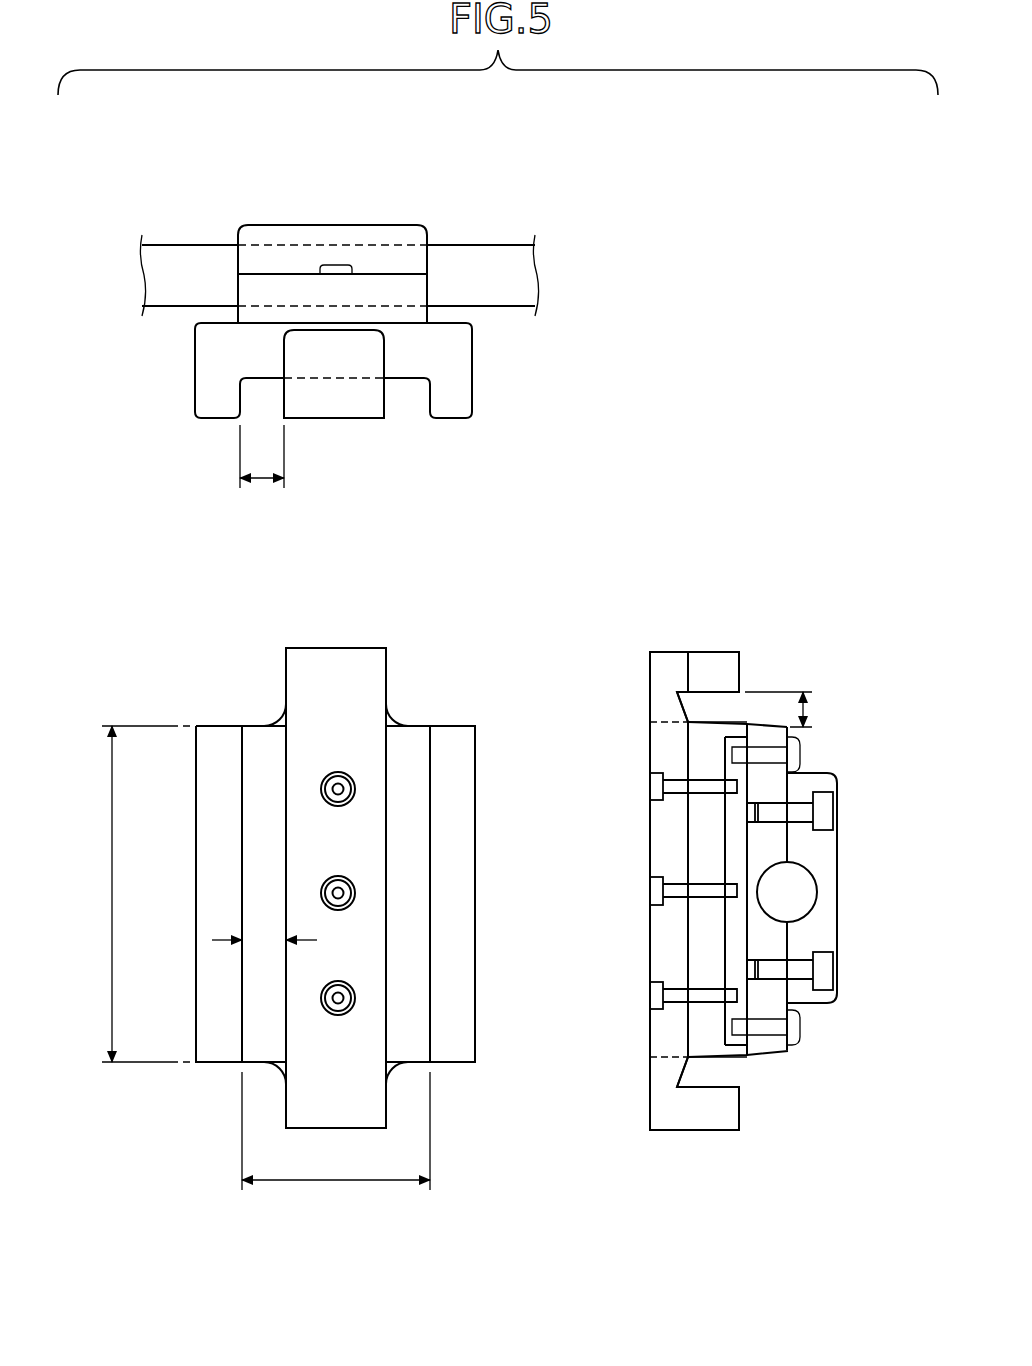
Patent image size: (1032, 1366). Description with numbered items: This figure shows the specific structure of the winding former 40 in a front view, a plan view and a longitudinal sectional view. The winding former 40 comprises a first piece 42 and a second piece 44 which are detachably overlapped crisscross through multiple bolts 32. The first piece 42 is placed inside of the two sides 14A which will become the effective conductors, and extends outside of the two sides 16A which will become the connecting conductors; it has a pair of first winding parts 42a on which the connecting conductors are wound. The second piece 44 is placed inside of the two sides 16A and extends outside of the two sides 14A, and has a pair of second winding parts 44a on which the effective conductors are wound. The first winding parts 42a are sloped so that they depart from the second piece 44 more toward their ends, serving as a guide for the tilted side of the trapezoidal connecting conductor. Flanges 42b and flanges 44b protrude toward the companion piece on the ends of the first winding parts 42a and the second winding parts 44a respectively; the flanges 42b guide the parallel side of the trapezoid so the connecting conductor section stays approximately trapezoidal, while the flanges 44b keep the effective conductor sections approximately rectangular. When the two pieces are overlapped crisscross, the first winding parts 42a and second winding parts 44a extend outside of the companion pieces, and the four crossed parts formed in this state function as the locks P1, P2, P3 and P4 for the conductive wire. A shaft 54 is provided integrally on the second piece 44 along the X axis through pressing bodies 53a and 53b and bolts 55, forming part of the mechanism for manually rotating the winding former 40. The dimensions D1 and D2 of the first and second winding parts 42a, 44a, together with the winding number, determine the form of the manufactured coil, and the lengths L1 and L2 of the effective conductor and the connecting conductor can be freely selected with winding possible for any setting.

The winding former 40 is at (500, 212).
The first piece 42 is at (358, 398).
The first winding parts 42a is at (688, 710).
The flanges 42b is at (718, 662).
The second piece 44 is at (420, 350).
The second winding parts 44a is at (272, 385).
The flanges 44b is at (208, 402).
The sides 14A is at (260, 388).
The sides 16A is at (748, 708).
The bolts 32 is at (337, 980).
The pressing body 53a is at (297, 287).
The pressing body 53b is at (262, 262).
The shaft 54 is at (168, 260).
The bolts 55 is at (827, 810).
The dimension of first winding parts D1 is at (808, 710).
The dimension of second winding parts D2 is at (265, 940).
The length of effective conductor L1 is at (131, 894).
The length of connecting conductor L2 is at (336, 1131).
The lock P1 is at (388, 723).
The lock P2 is at (282, 723).
The lock P3 is at (283, 1067).
The lock P4 is at (388, 1067).